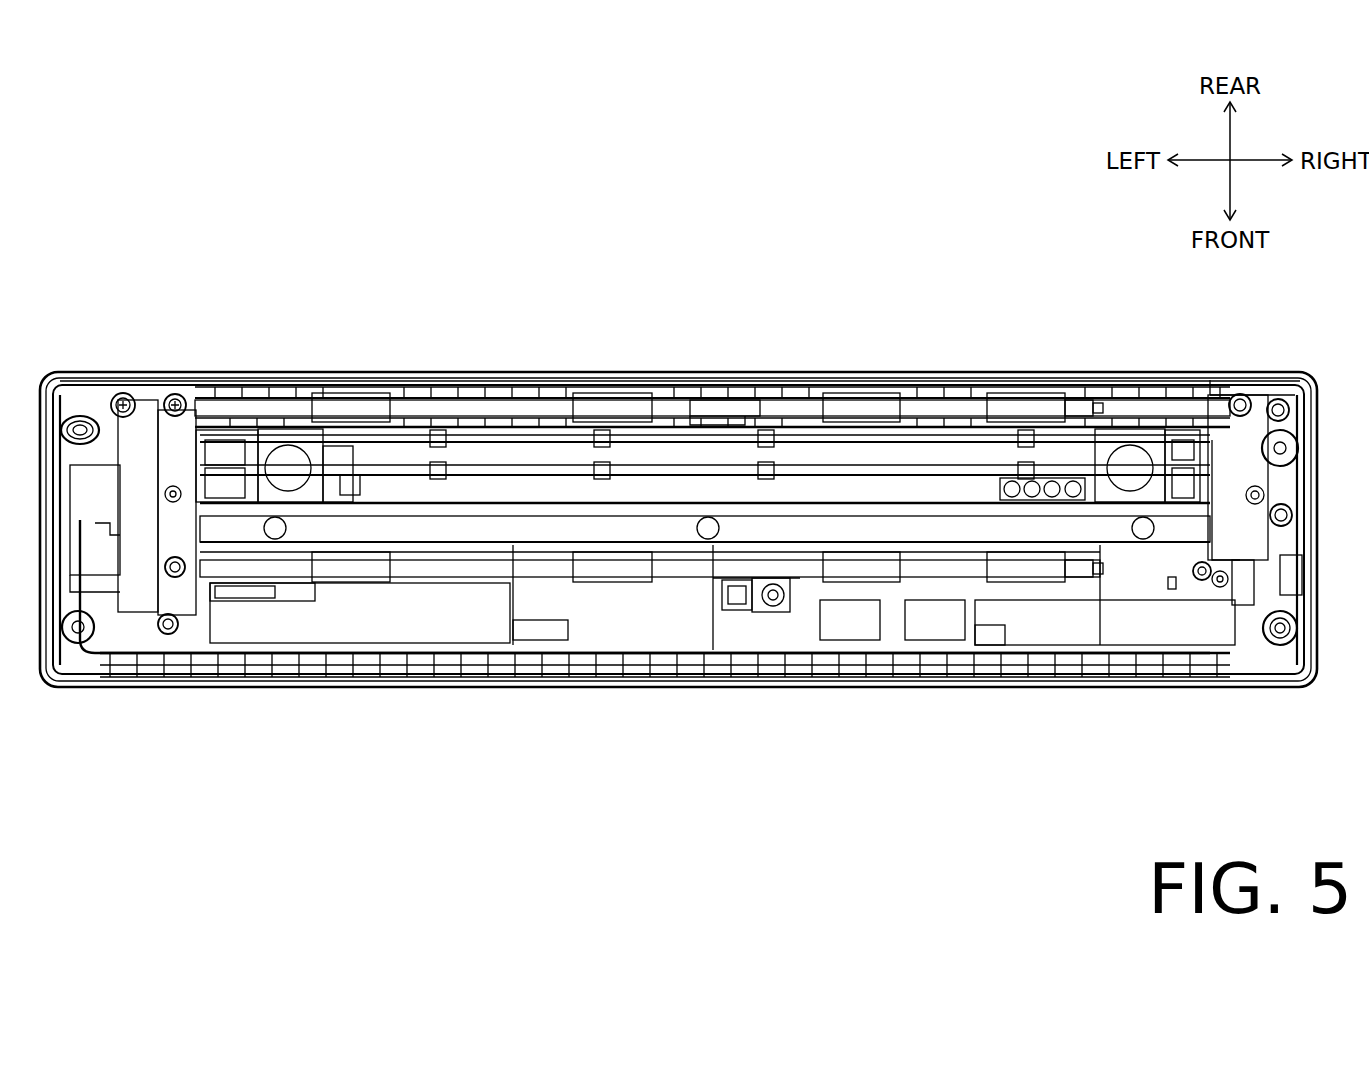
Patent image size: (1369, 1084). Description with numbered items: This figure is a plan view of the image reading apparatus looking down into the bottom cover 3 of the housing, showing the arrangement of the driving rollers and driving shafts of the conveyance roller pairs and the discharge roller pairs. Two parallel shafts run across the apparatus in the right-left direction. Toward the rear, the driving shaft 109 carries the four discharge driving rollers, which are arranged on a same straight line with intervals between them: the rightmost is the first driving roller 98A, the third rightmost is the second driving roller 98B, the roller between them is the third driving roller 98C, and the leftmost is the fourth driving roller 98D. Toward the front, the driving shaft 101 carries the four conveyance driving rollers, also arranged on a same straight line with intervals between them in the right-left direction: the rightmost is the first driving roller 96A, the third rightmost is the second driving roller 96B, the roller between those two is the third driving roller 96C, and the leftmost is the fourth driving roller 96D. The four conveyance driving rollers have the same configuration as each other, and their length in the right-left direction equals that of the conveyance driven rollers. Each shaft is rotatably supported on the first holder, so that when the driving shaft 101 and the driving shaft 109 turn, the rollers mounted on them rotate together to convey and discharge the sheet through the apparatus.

The bottom cover 3 is at (75, 688).
The first driving roller 98A is at (1047, 405).
The second driving roller 98B is at (632, 405).
The third driving roller 98C is at (862, 405).
The fourth driving roller 98D is at (349, 405).
The first driving roller 96A is at (1047, 580).
The second driving roller 96B is at (632, 577).
The third driving roller 96C is at (867, 578).
The fourth driving roller 96D is at (346, 578).
The driving shaft 109 is at (732, 410).
The driving shaft 101 is at (720, 570).